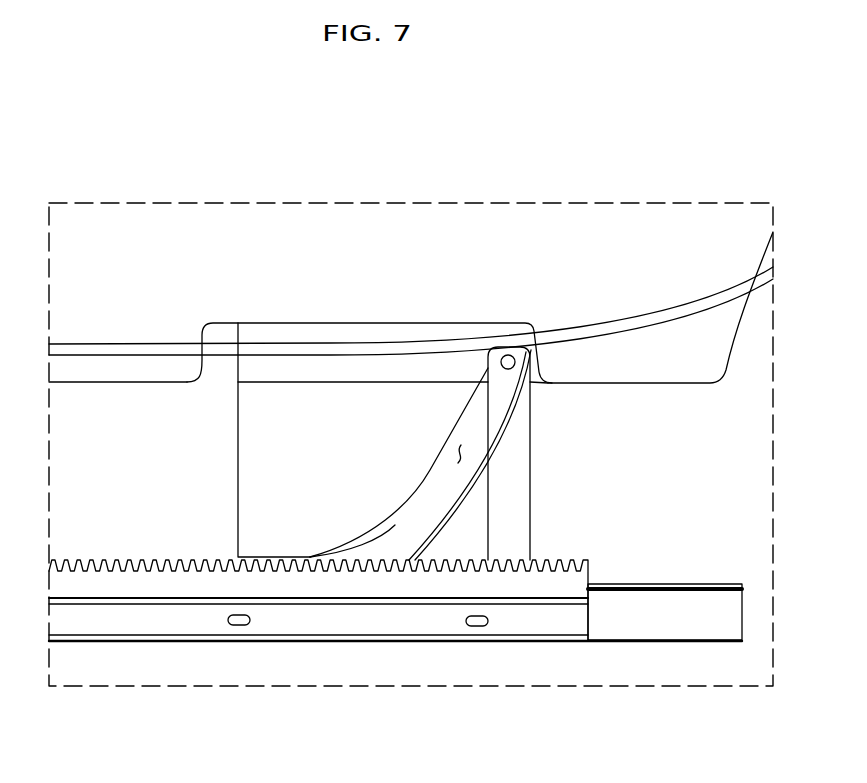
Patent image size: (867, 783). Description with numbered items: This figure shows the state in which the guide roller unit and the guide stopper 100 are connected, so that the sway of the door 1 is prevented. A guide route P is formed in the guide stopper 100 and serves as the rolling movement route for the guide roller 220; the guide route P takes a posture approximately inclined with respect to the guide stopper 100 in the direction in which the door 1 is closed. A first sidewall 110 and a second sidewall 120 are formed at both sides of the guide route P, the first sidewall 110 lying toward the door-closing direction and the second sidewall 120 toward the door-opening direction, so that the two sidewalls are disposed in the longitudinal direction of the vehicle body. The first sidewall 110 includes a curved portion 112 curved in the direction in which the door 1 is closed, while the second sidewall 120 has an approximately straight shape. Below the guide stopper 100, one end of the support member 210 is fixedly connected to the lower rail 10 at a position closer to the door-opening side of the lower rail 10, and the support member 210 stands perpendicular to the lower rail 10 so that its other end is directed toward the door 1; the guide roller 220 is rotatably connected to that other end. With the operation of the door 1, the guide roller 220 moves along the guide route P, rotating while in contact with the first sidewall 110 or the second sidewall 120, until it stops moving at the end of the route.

The door 1 is at (677, 348).
The guide stopper 100 is at (293, 312).
The first sidewall 110 is at (422, 485).
The curved portion 112 is at (370, 538).
The second sidewall 120 is at (510, 405).
The support member 210 is at (517, 497).
The guide roller 220 is at (508, 355).
The guide route P is at (462, 457).
The lower rail 10 is at (155, 588).